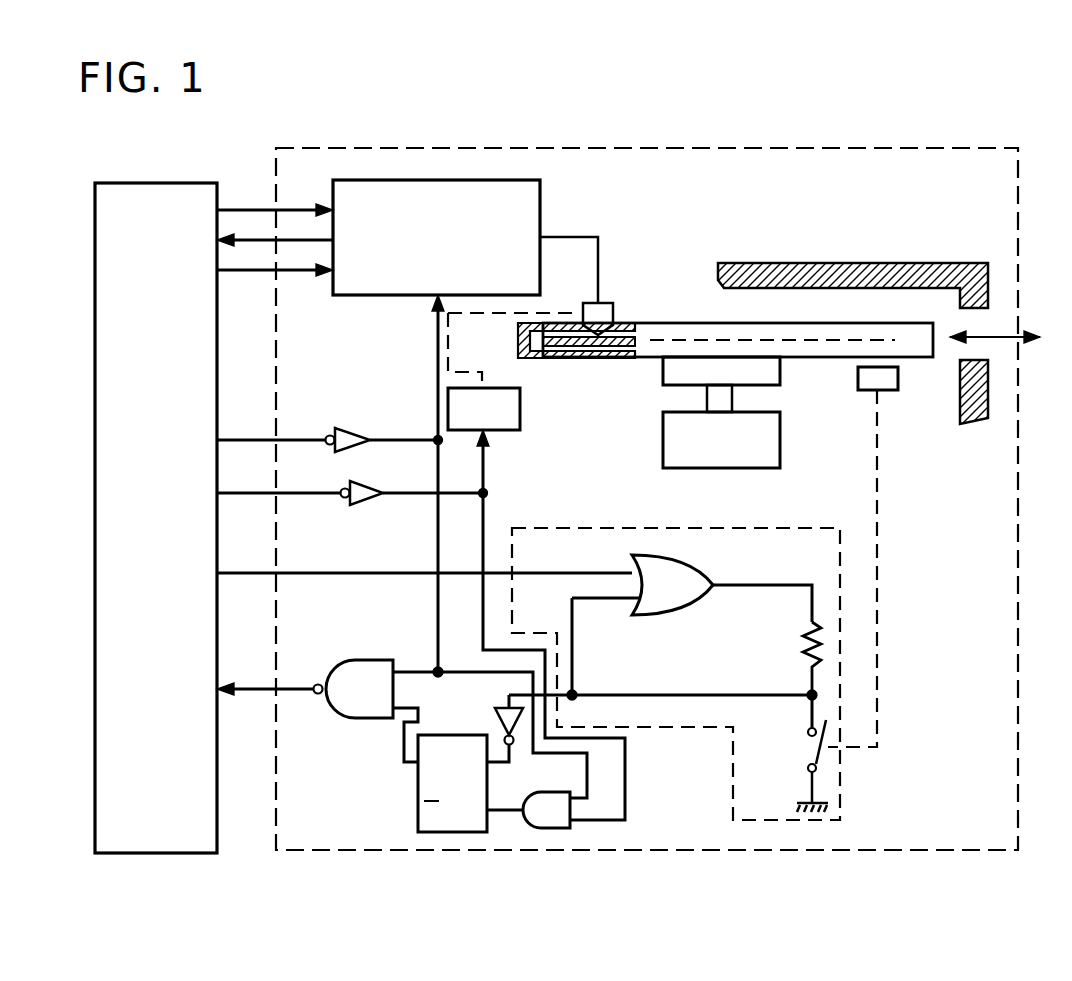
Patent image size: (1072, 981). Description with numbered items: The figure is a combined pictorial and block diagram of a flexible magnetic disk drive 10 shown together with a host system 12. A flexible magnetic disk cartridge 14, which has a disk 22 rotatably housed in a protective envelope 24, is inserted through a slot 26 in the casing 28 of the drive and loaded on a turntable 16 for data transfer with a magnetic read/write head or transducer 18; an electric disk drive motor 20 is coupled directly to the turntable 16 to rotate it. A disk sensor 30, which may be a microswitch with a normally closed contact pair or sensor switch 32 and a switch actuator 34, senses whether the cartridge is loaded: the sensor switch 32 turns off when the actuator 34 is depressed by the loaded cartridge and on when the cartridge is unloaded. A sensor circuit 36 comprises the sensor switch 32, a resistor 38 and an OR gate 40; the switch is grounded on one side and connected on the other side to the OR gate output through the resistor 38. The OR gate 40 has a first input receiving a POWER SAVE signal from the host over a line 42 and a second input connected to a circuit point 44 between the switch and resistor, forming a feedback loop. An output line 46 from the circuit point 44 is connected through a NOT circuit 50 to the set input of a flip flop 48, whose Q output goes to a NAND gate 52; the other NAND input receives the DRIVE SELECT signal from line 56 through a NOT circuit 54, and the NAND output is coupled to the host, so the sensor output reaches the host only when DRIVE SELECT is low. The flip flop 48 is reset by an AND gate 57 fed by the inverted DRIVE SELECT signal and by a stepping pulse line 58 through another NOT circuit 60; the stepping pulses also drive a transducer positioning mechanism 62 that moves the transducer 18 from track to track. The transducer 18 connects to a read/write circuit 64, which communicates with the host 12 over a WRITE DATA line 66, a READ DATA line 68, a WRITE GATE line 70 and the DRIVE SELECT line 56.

The disk drive 10 is at (920, 146).
The host system 12 is at (140, 183).
The flexible magnetic disk cartridge 14 is at (675, 310).
The turntable 16 is at (780, 383).
The magnetic read/write head 18 is at (606, 314).
The electric disk drive motor 20 is at (780, 440).
The disk 22 is at (596, 358).
The protective envelope 24 is at (518, 345).
The slot 26 is at (961, 306).
The casing 28 is at (834, 262).
The disk sensor 30 is at (886, 575).
The sensor switch 32 is at (810, 750).
The switch actuator 34 is at (898, 379).
The sensor circuit 36 is at (578, 528).
The resistor 38 is at (808, 635).
The OR gate 40 is at (668, 615).
The line 42 is at (238, 573).
The circuit point 44 is at (808, 690).
The output line 46 is at (522, 692).
The flip flop 48 is at (418, 788).
The NOT circuit 50 is at (516, 722).
The NAND gate 52 is at (362, 660).
The NOT circuit 54 is at (346, 428).
The DRIVE SELECT line 56 is at (240, 440).
The AND gate 57 is at (582, 812).
The stepping pulse line 58 is at (308, 494).
The NOT circuit 60 is at (376, 505).
The transducer positioning mechanism 62 is at (520, 420).
The read/write circuit 64 is at (545, 228).
The WRITE DATA line 66 is at (236, 209).
The READ DATA line 68 is at (258, 242).
The WRITE GATE line 70 is at (304, 271).